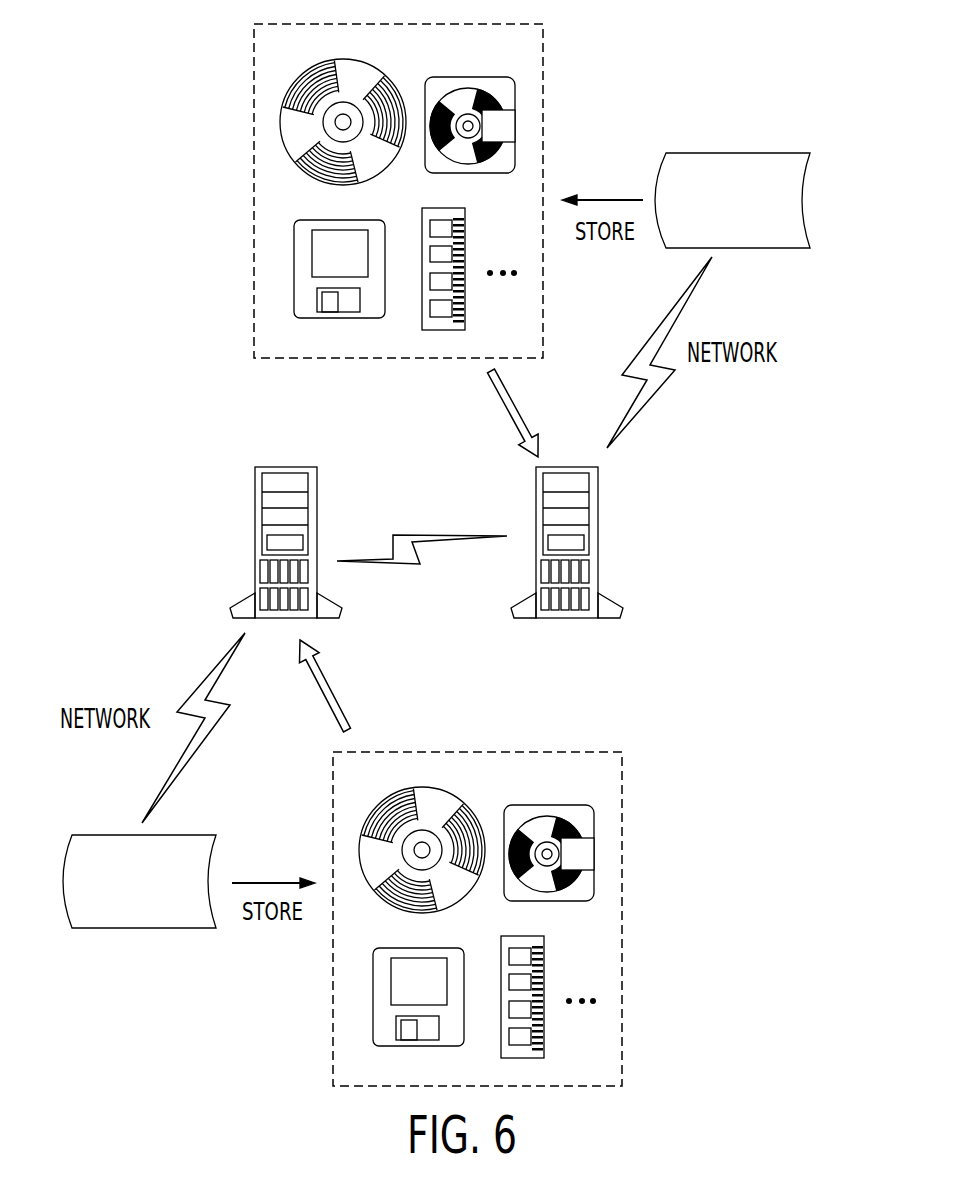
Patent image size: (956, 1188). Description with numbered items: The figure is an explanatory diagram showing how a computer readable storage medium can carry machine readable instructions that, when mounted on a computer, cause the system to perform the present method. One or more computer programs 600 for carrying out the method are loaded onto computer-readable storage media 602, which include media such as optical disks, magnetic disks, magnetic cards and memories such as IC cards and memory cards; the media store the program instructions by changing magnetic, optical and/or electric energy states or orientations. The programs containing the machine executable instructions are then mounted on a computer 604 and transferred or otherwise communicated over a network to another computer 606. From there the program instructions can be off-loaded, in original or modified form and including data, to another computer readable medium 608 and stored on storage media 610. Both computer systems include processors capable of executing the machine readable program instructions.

The computer programs 600 is at (137, 928).
The computer-readable storage media 602 is at (622, 792).
The computer 604 is at (283, 467).
The computer 606 is at (600, 512).
The computer readable medium 608 is at (743, 153).
The storage media 610 is at (543, 76).